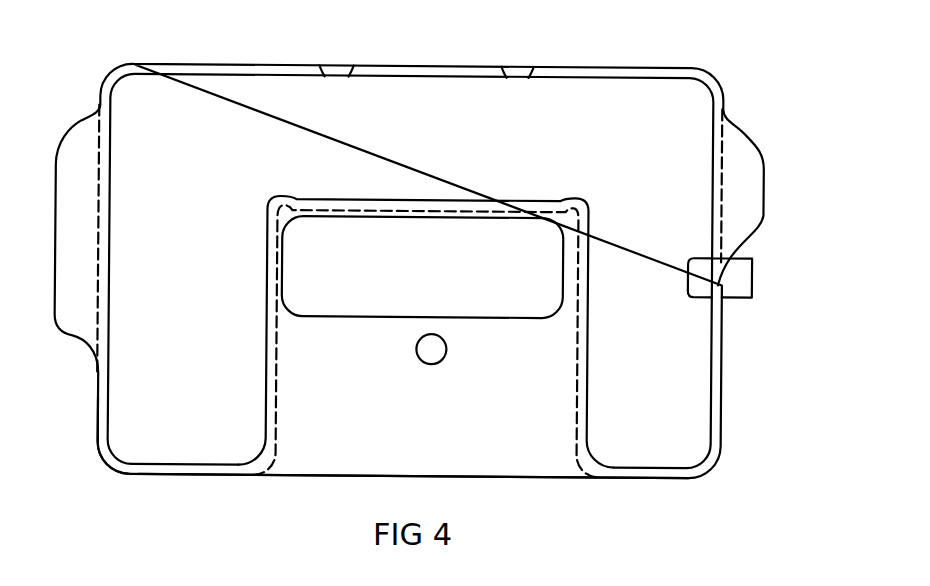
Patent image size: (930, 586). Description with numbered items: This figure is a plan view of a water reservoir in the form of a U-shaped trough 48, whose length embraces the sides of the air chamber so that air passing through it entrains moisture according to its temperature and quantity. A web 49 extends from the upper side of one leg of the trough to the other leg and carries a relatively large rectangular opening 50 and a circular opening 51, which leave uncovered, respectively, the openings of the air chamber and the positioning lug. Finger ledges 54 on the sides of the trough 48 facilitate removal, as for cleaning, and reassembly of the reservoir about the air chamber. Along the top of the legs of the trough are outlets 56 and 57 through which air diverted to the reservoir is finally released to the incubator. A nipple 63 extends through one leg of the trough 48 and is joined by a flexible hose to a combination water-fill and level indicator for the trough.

The U-shaped trough 48 is at (570, 344).
The web 49 is at (521, 466).
The rectangular opening 50 is at (338, 311).
The circular opening 51 is at (442, 359).
The finger ledges 54 is at (763, 214).
The outlet 56 is at (96, 436).
The outlet 57 is at (712, 444).
The nipple 63 is at (730, 292).